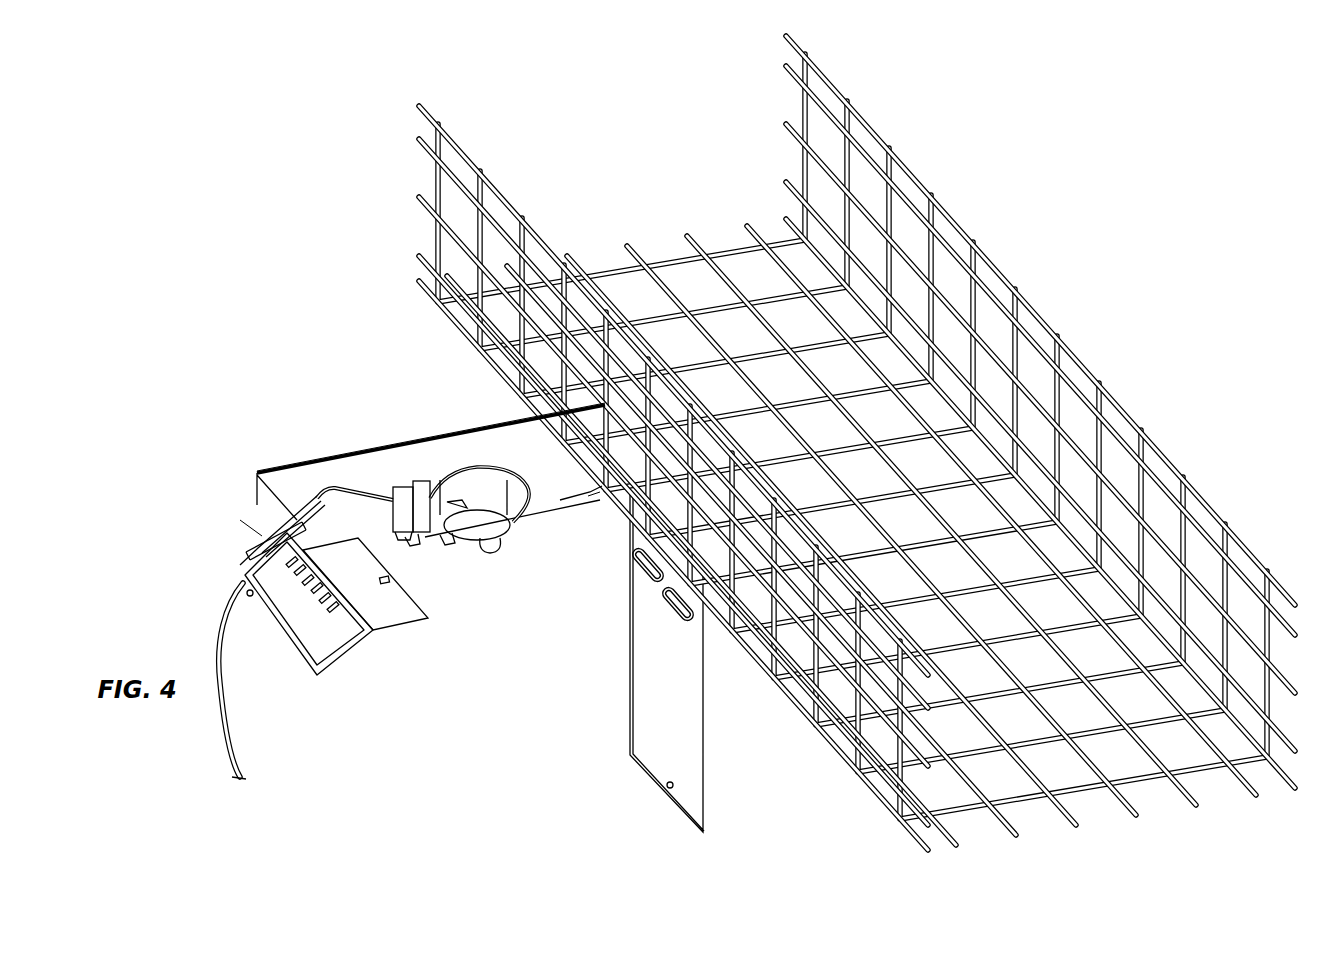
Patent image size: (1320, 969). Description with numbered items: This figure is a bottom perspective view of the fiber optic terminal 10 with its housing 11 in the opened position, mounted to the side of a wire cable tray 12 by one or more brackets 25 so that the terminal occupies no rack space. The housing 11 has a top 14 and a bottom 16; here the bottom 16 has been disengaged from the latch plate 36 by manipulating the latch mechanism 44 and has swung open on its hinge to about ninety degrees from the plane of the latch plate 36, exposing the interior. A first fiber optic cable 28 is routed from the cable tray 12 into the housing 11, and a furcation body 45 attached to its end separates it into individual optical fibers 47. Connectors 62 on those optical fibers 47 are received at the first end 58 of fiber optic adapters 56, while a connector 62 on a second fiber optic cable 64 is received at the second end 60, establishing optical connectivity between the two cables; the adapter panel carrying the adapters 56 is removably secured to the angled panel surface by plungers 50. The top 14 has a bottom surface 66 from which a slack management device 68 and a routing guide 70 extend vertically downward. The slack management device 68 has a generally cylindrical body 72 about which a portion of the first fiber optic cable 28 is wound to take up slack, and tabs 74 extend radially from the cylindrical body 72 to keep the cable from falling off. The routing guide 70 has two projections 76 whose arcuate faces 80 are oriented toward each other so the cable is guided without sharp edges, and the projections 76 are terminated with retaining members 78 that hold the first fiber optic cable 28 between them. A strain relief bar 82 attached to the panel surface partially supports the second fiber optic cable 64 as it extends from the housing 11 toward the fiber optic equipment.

The fiber optic terminal 10 is at (388, 558).
The housing 11 is at (468, 430).
The cable tray 12 is at (857, 443).
The top 14 is at (432, 459).
The bottom 16 is at (638, 663).
The bracket 25 is at (628, 452).
The first fiber optic cable 28 is at (345, 483).
The latch plate 36 is at (340, 615).
The latch mechanism 44 is at (675, 787).
The furcation body 45 is at (590, 497).
The individual optical fibers 47 is at (577, 492).
The plungers 50 is at (248, 517).
The fiber optic adapters 56 is at (268, 532).
The first end 58 is at (280, 510).
The second end 60 is at (263, 550).
The connectors 62 is at (302, 510).
The second fiber optic cable 64 is at (232, 732).
The bottom surface 66 is at (542, 503).
The slack management device 68 is at (515, 535).
The routing guide 70 is at (453, 545).
The cylindrical body 72 is at (510, 522).
The tabs 74 is at (507, 558).
The projections 76 is at (403, 500).
The retaining members 78 is at (410, 537).
The arcuate face 80 is at (425, 508).
The strain relief bar 82 is at (292, 645).